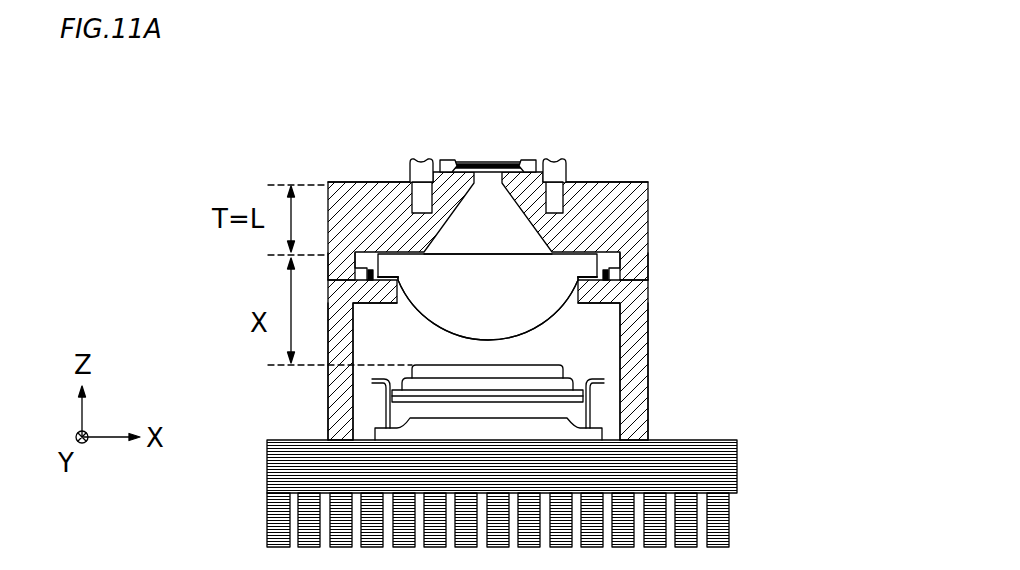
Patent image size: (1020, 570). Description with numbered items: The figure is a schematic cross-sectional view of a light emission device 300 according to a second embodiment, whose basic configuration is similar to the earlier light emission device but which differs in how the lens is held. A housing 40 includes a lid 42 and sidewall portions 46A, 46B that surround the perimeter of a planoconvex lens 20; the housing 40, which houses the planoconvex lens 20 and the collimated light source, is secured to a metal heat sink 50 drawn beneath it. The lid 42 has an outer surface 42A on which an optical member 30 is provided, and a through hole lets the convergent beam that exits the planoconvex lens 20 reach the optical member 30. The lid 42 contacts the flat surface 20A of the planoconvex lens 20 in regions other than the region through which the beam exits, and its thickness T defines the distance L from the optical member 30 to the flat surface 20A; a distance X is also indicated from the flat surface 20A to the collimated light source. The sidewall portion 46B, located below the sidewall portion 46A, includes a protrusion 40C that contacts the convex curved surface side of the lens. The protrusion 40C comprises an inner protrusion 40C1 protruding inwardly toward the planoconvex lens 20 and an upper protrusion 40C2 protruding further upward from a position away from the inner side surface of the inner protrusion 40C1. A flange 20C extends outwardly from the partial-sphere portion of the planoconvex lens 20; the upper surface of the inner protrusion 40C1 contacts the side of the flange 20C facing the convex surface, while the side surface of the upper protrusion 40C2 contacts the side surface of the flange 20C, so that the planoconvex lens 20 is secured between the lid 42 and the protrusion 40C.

The light emission device 300 is at (759, 150).
The housing 40 is at (774, 252).
The lid 42 is at (378, 210).
The outer surface 42A is at (633, 180).
The sidewall portion 46A is at (649, 262).
The sidewall portion 46B is at (647, 352).
The protrusion 40C is at (619, 299).
The inner protrusion 40C1 is at (590, 306).
The upper protrusion 40C2 is at (624, 272).
The planoconvex lens 20 is at (498, 313).
The flat surface 20A is at (462, 243).
The flange 20C is at (410, 268).
The optical member 30 is at (505, 158).
The heat sink 50 is at (697, 440).